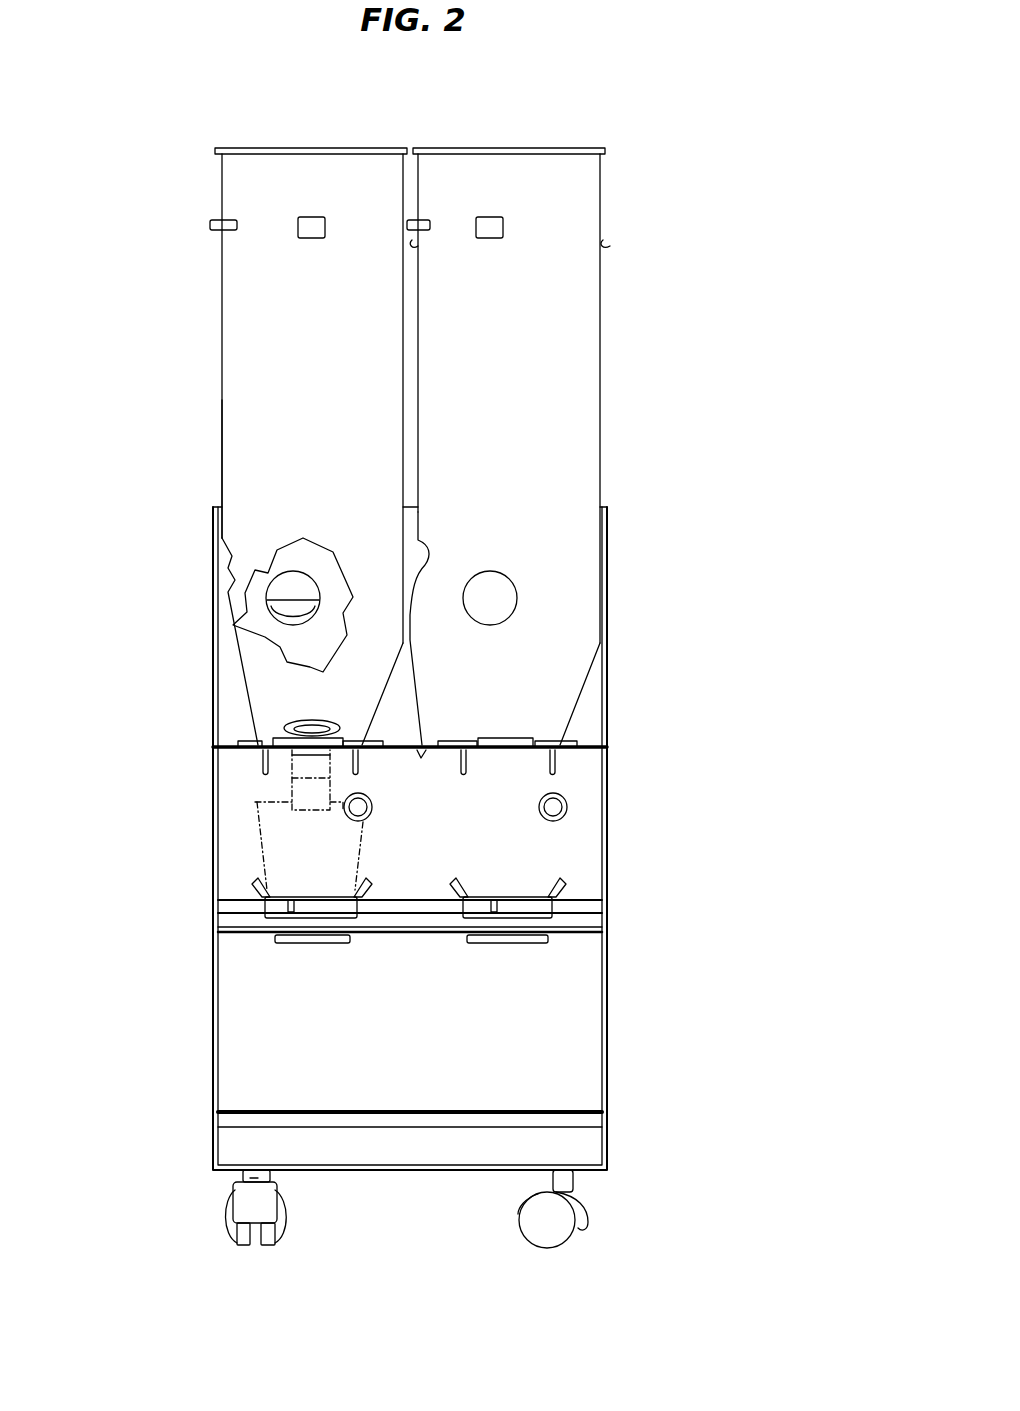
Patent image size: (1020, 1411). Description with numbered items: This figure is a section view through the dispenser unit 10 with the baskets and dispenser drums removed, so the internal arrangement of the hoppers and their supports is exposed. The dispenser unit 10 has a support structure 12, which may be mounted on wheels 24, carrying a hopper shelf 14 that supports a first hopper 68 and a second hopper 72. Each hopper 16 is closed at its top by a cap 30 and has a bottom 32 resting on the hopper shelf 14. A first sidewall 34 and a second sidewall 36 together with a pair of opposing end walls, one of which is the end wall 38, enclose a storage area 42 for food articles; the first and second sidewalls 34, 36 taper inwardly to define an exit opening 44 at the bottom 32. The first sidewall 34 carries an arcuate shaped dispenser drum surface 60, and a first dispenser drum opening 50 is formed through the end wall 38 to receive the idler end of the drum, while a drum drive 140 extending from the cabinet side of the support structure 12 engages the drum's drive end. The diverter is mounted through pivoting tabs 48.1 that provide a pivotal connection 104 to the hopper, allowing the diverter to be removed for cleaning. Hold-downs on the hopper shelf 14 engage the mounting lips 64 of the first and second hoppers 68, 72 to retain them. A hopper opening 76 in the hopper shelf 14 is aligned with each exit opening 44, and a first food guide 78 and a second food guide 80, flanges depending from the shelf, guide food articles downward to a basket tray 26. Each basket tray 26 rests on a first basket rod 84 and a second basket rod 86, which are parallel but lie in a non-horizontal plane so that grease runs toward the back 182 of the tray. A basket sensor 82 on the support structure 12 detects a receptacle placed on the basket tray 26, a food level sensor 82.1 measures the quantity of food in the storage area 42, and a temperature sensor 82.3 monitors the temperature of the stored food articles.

The dispenser unit 10 is at (188, 318).
The support structure 12 is at (213, 845).
The hopper shelf 14 is at (450, 672).
The hopper 16 is at (222, 170).
The wheels 24 is at (228, 1222).
The basket tray 26 is at (283, 937).
The cap 30 is at (273, 150).
The bottom 32 is at (262, 722).
The first sidewall 34 is at (222, 433).
The second sidewall 36 is at (418, 172).
The end wall 38 is at (300, 408).
The storage area 42 is at (236, 362).
The exit opening 44 is at (300, 713).
The pivoting tabs 48.1 is at (428, 243).
The first dispenser drum opening 50 is at (297, 571).
The arcuate shaped dispenser drum surface 60 is at (233, 580).
The mounting lip 64 is at (263, 760).
The first hopper 68 is at (252, 150).
The second hopper 72 is at (565, 148).
The hopper opening 76 is at (300, 810).
The first food guide 78 is at (296, 786).
The second food guide 80 is at (345, 815).
The basket sensor 82 is at (255, 882).
The food level sensor 82.1 is at (407, 222).
The temperature sensor 82.3 is at (315, 217).
The first basket rod 84 is at (285, 905).
The second basket rod 86 is at (233, 928).
The pivotal connection 104 is at (635, 228).
The drum drive 140 is at (268, 625).
The back 182 is at (283, 920).